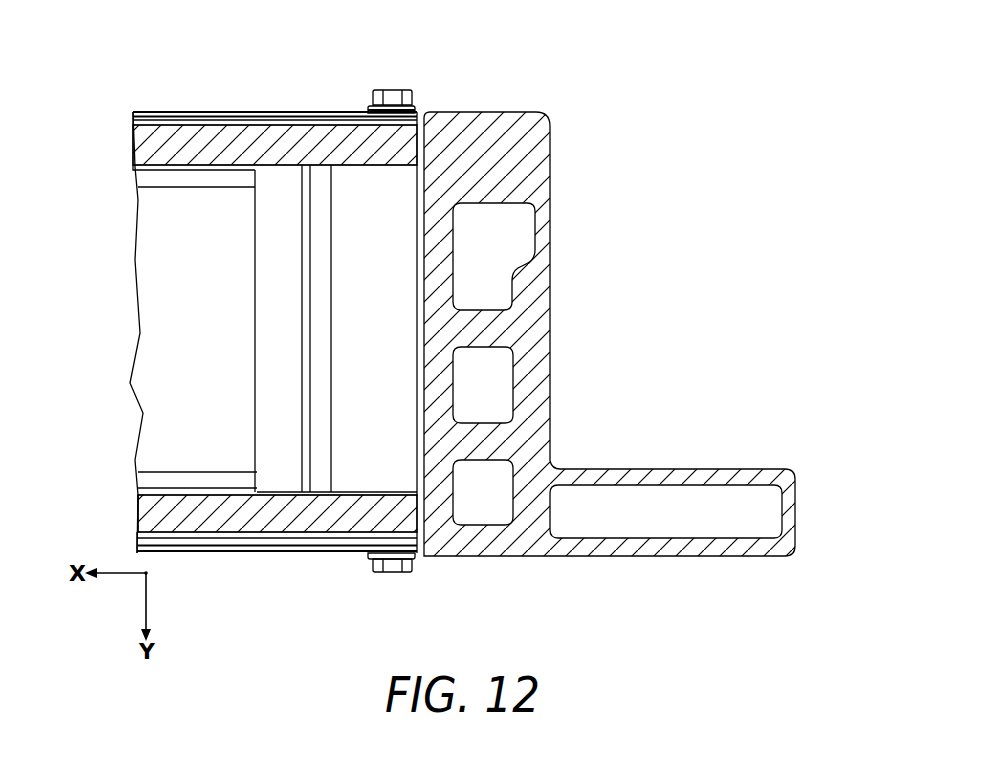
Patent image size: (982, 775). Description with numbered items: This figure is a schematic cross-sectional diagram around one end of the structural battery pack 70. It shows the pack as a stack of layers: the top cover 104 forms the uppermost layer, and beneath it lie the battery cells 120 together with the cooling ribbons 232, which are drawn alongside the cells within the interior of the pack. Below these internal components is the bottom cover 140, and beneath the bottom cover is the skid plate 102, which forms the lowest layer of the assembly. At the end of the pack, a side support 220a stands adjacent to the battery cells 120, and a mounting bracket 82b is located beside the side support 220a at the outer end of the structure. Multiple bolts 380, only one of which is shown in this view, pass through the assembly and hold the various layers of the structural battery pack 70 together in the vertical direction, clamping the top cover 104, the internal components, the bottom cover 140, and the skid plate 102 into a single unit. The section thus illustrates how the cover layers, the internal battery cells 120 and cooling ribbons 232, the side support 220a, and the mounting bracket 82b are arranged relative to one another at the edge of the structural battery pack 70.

The structural battery pack 70 is at (198, 99).
The top cover 104 is at (133, 117).
The skid plate 102 is at (222, 553).
The bottom cover 140 is at (281, 527).
The cooling ribbons 232 is at (217, 346).
The battery cells 120 is at (298, 309).
The side support 220a is at (405, 346).
The bolts 380 is at (370, 563).
The mounting bracket 82b is at (640, 468).